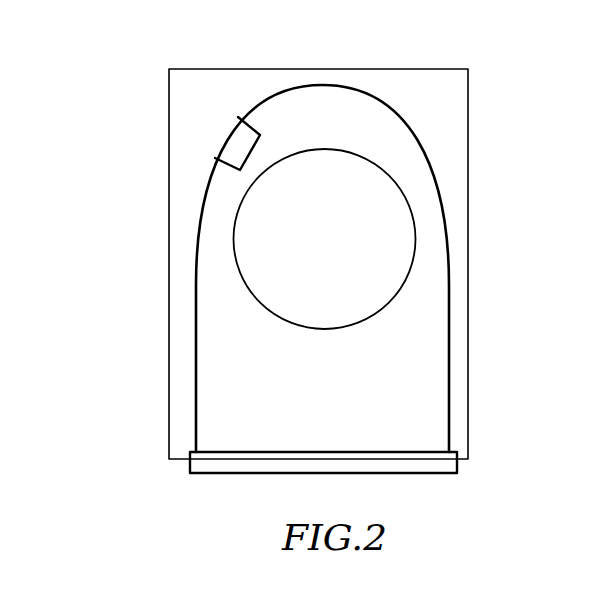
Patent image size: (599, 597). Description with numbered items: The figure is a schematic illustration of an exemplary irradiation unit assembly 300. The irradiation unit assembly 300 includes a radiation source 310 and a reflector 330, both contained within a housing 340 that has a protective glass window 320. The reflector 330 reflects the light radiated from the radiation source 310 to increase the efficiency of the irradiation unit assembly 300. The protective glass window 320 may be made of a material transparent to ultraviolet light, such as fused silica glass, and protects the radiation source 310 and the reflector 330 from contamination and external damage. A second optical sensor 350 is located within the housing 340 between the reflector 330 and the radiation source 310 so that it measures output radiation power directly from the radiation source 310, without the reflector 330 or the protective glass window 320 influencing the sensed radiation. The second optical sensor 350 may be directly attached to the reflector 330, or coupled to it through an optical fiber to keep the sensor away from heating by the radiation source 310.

The irradiation unit assembly 300 is at (266, 268).
The radiation source 310 is at (323, 330).
The protective glass window 320 is at (247, 462).
The reflector 330 is at (195, 337).
The housing 340 is at (168, 173).
The second optical sensor 350 is at (238, 133).